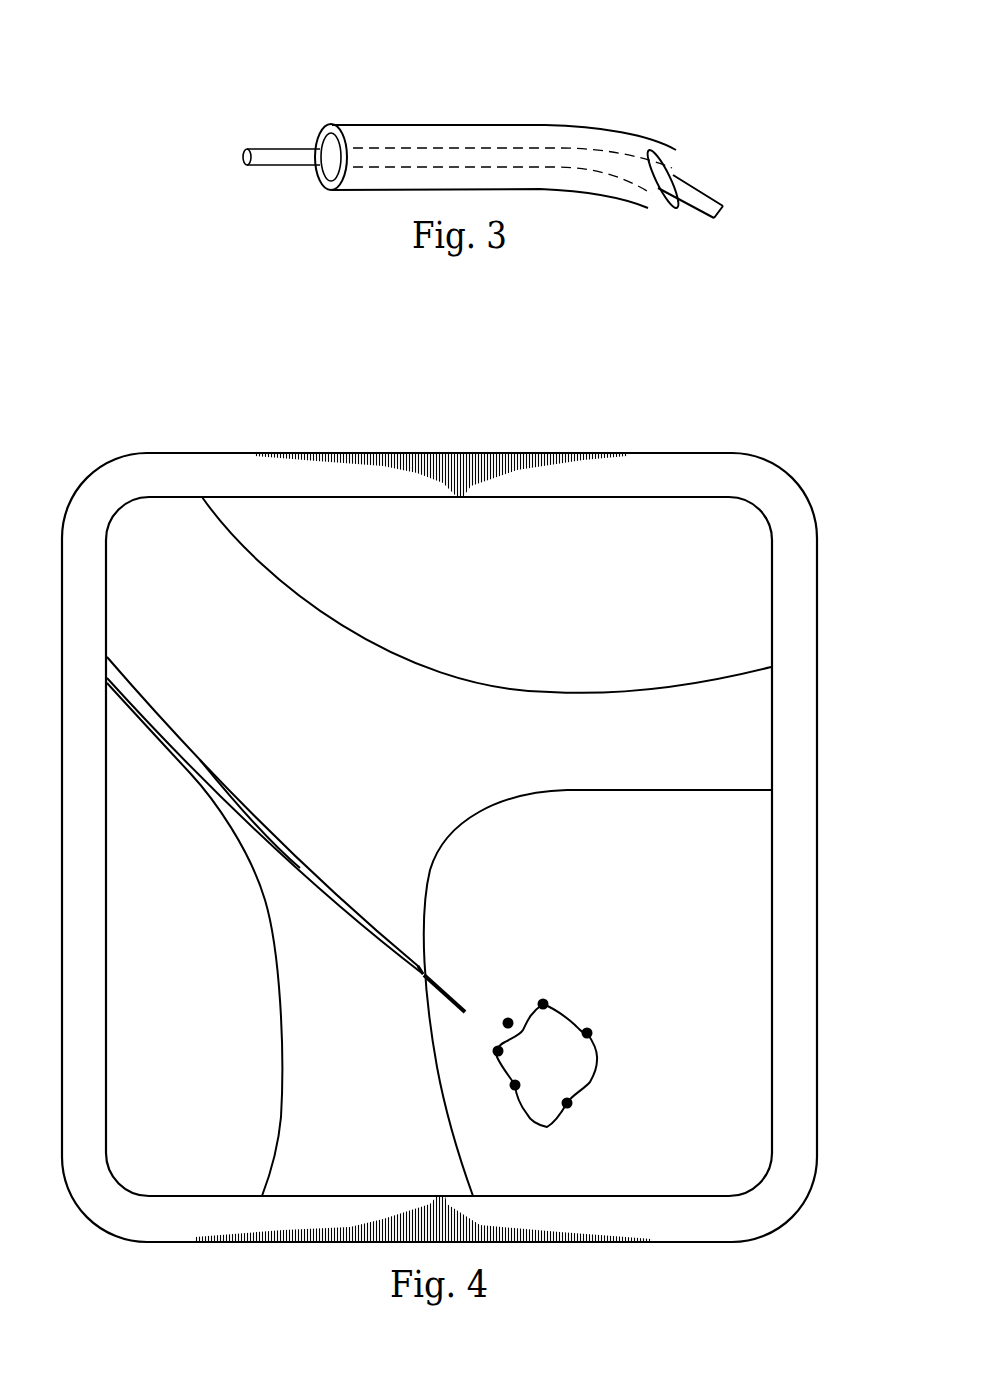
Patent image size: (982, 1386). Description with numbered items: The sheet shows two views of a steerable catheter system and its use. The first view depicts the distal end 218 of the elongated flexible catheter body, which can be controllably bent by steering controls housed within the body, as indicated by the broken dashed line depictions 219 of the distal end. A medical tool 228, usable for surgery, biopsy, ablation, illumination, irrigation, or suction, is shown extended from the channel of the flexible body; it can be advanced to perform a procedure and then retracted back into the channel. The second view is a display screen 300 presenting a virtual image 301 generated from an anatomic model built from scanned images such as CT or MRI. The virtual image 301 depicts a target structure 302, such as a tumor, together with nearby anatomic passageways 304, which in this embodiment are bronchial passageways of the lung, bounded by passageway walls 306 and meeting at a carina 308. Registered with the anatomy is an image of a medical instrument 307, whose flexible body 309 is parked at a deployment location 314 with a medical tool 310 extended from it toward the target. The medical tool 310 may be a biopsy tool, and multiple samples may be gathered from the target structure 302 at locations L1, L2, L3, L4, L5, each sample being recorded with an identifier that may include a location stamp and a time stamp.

In FIG. 3, the distal end 218 is at (340, 106).
In FIG. 3, the broken dashed line depictions 219 is at (317, 177).
In FIG. 3, the medical tool 228 is at (283, 148).
In FIG. 4, the display screen 300 is at (219, 446).
In FIG. 4, the virtual image 301 is at (665, 532).
In FIG. 4, the target structure 302 is at (600, 1063).
In FIG. 4, the anatomic passageways 304 is at (235, 651).
In FIG. 4, the passageway walls 306 is at (390, 638).
In FIG. 4, the medical instrument 307 is at (306, 845).
In FIG. 4, the carina 308 is at (465, 817).
In FIG. 4, the flexible body 309 is at (247, 812).
In FIG. 4, the medical tool 310 is at (472, 975).
In FIG. 4, the deployment location 314 is at (420, 981).
In FIG. 4, the location L1 is at (554, 993).
In FIG. 4, the location L2 is at (602, 1021).
In FIG. 4, the location L3 is at (578, 1116).
In FIG. 4, the location L4 is at (510, 1099).
In FIG. 4, the location L5 is at (491, 1029).